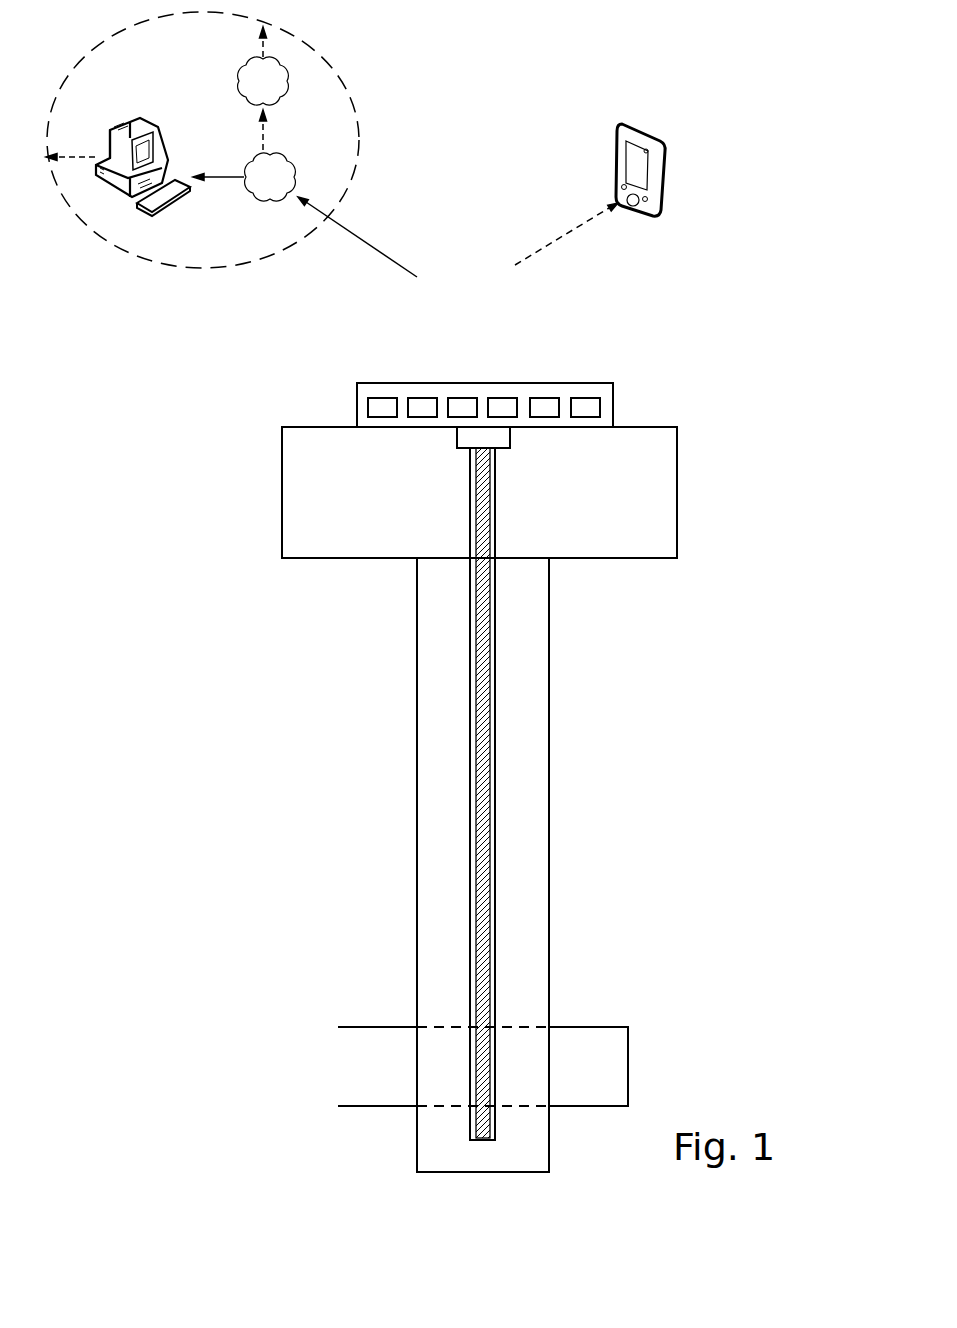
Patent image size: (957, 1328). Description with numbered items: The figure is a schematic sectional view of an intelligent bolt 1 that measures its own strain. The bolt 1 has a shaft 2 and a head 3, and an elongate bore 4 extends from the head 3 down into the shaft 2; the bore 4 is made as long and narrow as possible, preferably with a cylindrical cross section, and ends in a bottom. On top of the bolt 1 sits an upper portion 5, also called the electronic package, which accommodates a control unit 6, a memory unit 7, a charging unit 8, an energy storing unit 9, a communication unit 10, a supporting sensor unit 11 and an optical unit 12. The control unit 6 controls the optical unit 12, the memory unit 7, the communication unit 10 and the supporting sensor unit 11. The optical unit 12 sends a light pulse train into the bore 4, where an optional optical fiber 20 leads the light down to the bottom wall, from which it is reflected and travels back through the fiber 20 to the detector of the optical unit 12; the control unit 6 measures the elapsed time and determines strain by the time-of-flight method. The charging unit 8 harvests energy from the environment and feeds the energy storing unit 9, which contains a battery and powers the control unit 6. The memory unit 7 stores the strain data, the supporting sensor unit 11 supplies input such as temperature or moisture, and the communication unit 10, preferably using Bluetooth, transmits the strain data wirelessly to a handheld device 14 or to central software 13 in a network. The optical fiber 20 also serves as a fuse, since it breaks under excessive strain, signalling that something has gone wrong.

The intelligent bolt 1 is at (304, 706).
The shaft 2 is at (556, 675).
The head 3 is at (686, 524).
The bore 4 is at (496, 765).
The upper portion 5 is at (615, 408).
The control unit 6 is at (600, 403).
The memory unit 7 is at (547, 400).
The charging unit 8 is at (502, 400).
The energy storing unit 9 is at (460, 398).
The communication unit 10 is at (422, 398).
The supporting sensor unit 11 is at (385, 398).
The optical unit 12 is at (457, 438).
The central software 13 is at (364, 118).
The handheld device 14 is at (672, 142).
The optical fiber 20 is at (496, 838).